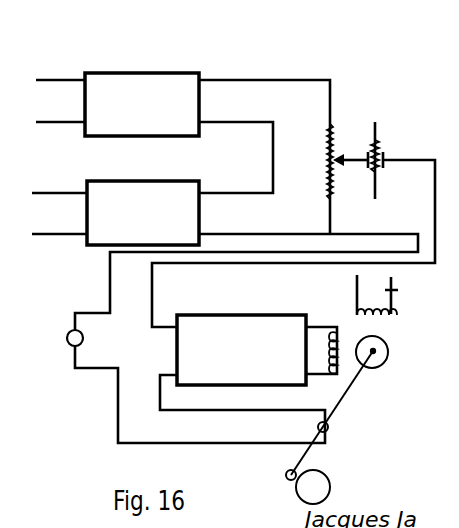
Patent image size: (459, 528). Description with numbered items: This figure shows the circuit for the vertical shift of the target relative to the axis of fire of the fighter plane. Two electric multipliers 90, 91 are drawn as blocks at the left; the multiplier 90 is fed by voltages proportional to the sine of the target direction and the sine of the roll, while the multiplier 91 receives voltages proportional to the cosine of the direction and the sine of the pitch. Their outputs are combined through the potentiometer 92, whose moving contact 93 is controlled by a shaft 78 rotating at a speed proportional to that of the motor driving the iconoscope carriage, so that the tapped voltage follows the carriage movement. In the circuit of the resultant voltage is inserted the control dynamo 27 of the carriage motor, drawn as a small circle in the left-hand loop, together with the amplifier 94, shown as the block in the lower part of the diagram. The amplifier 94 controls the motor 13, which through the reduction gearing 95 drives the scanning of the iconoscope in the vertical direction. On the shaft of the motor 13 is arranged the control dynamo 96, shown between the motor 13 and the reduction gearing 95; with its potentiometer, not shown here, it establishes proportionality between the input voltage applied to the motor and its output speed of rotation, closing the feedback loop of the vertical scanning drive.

The electric multiplier 90 is at (143, 81).
The electric multiplier 91 is at (182, 195).
The potentiometer 92 is at (333, 140).
The shaft 78 is at (378, 128).
The moving contact 93 is at (352, 161).
The amplifier 94 is at (275, 323).
The motor 13 is at (389, 348).
The control dynamo 27 is at (67, 346).
The control dynamo 96 is at (331, 424).
The reduction gearing 95 is at (332, 488).